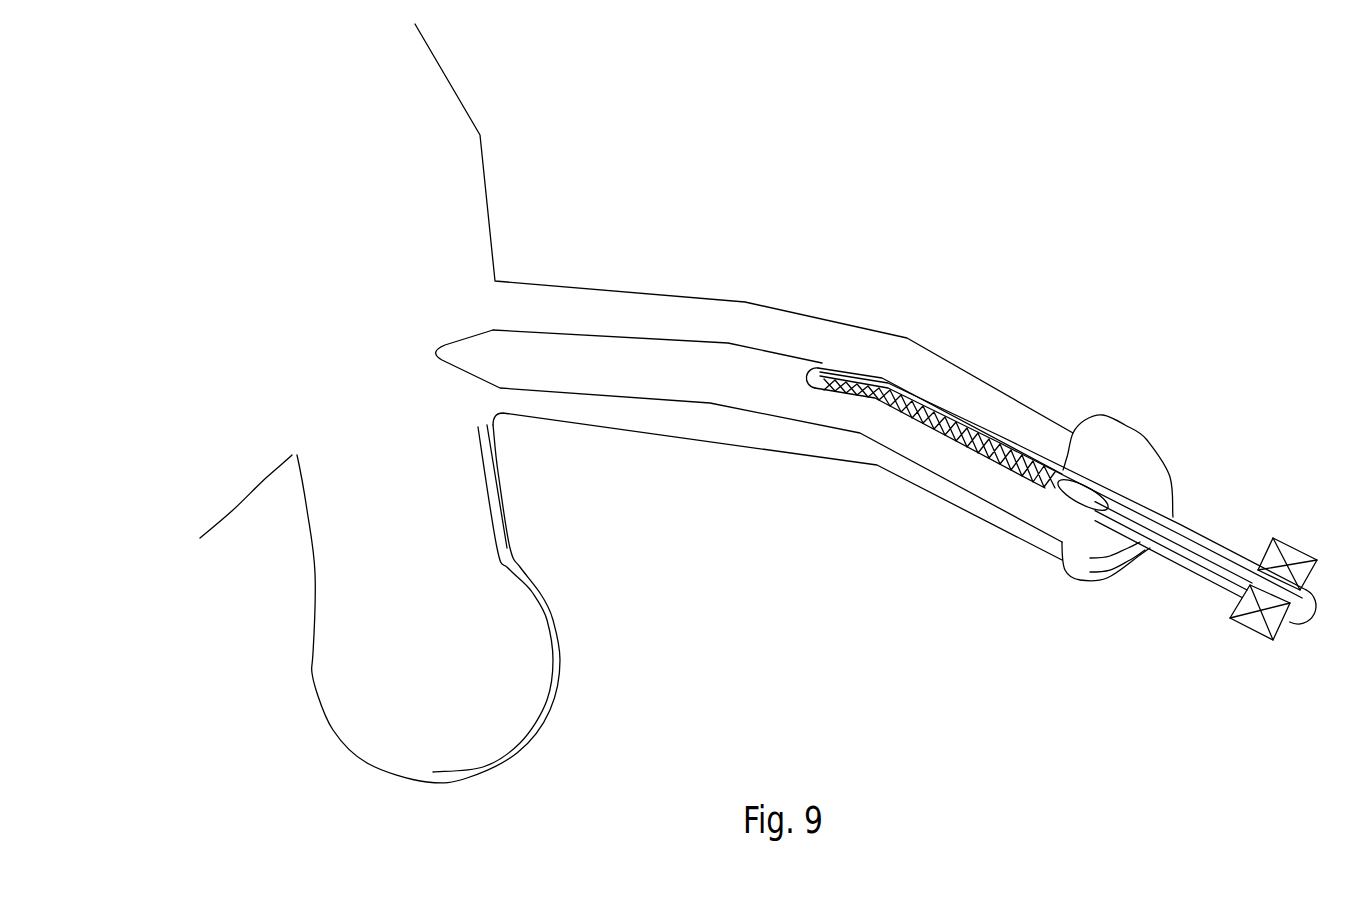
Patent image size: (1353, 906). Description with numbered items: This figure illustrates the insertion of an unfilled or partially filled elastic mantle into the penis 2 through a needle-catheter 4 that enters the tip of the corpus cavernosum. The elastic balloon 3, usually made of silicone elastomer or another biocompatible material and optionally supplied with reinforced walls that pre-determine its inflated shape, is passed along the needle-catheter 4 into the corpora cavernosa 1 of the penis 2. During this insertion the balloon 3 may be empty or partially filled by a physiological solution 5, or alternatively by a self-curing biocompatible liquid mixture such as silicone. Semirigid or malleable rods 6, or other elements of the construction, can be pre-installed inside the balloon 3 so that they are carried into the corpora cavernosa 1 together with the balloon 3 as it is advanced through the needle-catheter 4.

The corpora cavernosa 1 is at (749, 328).
The penis 2 is at (636, 403).
The elastic balloon 3 is at (959, 315).
The needle-catheter 4 is at (1068, 534).
The physiological solution 5 is at (930, 543).
The malleable rods 6 is at (940, 303).